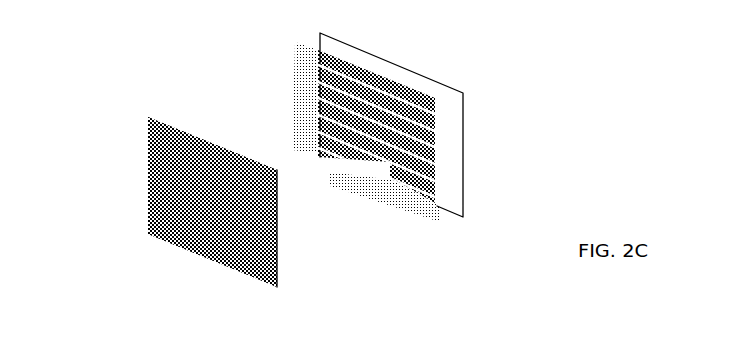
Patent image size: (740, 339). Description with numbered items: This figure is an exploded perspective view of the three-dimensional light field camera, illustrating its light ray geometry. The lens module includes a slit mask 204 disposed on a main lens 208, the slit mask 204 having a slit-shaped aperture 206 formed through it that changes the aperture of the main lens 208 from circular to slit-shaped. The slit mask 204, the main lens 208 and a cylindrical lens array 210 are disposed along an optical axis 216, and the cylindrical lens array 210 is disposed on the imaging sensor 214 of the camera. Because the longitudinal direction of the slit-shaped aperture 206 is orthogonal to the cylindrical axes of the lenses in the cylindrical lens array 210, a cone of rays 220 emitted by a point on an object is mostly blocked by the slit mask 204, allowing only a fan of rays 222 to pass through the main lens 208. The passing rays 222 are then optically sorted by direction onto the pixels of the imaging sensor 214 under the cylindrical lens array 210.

The slit mask 204 is at (197, 107).
The main lens 208 is at (197, 107).
The slit-shaped aperture 206 is at (210, 243).
The cylindrical lens array 210 is at (431, 245).
The imaging sensor 214 is at (458, 120).
The optical axis 216 is at (278, 263).
The cone of rays 220 is at (128, 170).
The fan of rays 222 is at (283, 152).